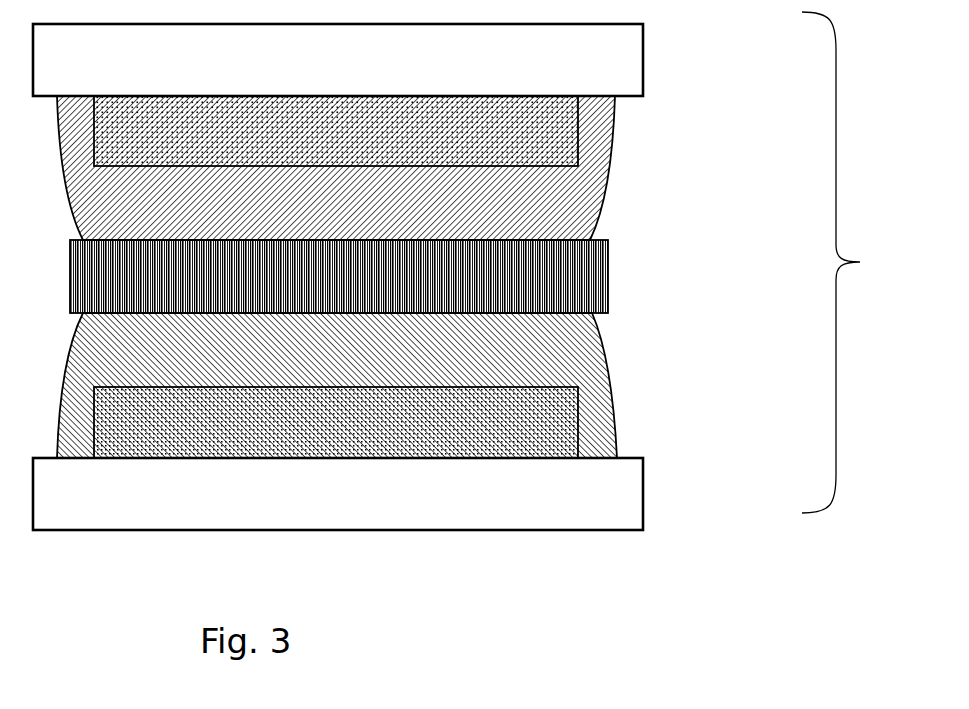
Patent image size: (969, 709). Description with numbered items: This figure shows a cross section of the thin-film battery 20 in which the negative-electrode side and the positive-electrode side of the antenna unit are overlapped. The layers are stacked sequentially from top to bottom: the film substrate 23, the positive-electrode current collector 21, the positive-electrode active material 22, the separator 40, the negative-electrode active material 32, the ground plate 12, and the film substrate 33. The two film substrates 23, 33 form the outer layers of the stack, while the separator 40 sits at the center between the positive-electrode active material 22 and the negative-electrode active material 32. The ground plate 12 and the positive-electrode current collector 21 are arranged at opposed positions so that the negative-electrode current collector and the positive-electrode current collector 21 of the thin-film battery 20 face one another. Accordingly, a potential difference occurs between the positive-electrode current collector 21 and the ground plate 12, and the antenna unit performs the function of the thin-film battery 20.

The thin-film battery 20 is at (853, 262).
The film substrate 23 is at (645, 62).
The positive-electrode current collector 21 is at (535, 135).
The positive-electrode active material 22 is at (535, 207).
The separator 40 is at (608, 273).
The negative-electrode active material 32 is at (600, 343).
The ground plate 12 is at (540, 430).
The film substrate 33 is at (645, 488).